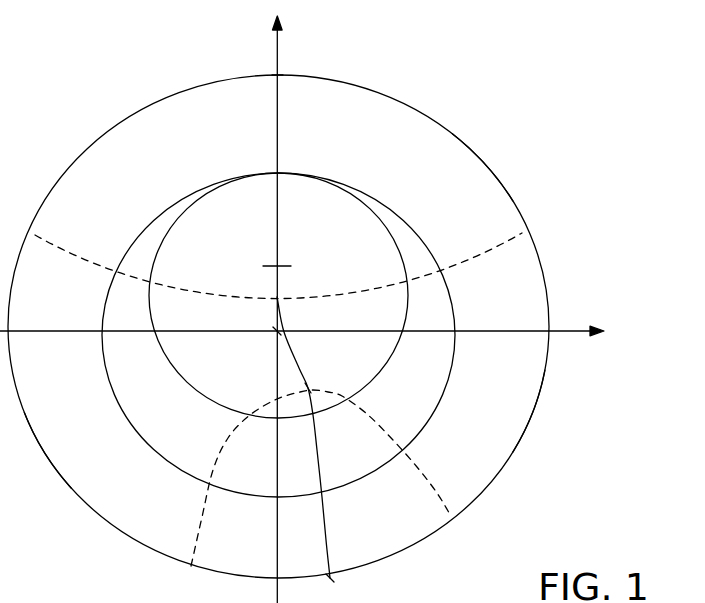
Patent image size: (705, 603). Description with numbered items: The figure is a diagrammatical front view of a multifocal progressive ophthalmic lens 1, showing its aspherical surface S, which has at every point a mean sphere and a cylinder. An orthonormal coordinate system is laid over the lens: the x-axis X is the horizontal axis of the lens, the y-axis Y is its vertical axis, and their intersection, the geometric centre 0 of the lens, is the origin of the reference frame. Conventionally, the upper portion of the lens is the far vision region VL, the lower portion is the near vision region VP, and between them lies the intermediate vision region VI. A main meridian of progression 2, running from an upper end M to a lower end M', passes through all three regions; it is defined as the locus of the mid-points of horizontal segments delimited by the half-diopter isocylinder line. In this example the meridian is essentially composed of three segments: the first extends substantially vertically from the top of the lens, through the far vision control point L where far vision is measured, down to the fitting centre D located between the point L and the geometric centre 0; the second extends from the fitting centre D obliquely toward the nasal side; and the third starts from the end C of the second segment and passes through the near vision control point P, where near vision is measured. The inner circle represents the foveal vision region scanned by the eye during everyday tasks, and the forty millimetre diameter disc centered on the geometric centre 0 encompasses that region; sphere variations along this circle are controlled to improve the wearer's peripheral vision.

The lens 1 is at (36, 218).
The main meridian of progression 2 is at (277, 140).
The upper end of the main meridian of progression M is at (295, 59).
The lower end of the main meridian of progression M' is at (350, 588).
The far vision control point L is at (280, 265).
The fitting centre D is at (277, 297).
The geometric centre of the lens 0 is at (275, 338).
The end of the second meridian segment C is at (309, 386).
The near vision control point P is at (315, 437).
The near vision region VP is at (423, 528).
The far vision region VL is at (484, 181).
The intermediate vision region VI is at (518, 417).
The aspherical surface S is at (64, 453).
The x-axis X is at (302, 348).
The y-axis Y is at (286, 302).